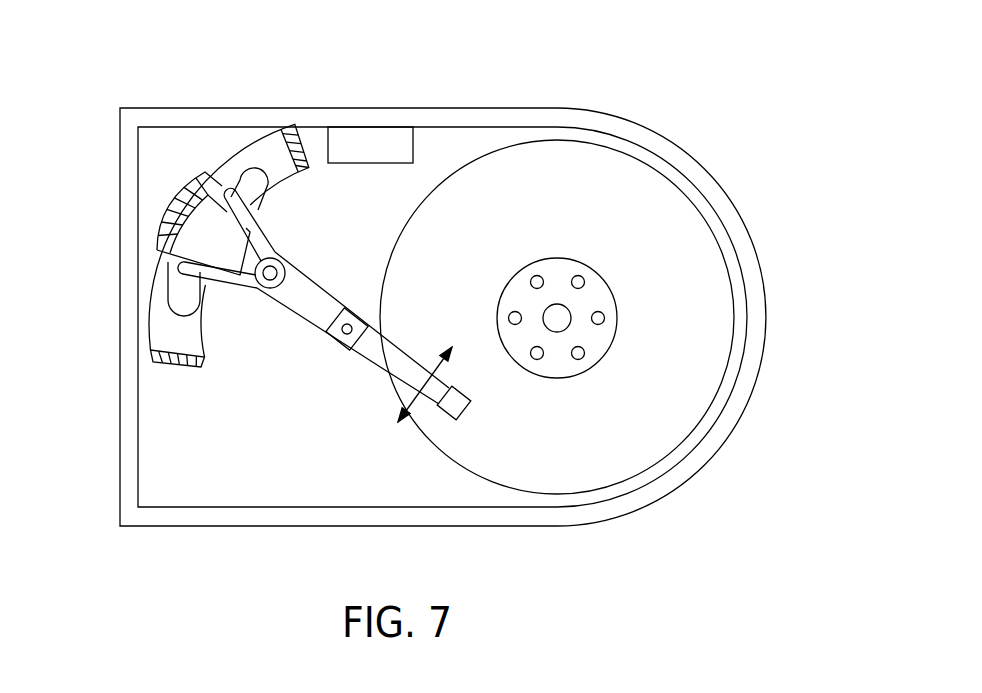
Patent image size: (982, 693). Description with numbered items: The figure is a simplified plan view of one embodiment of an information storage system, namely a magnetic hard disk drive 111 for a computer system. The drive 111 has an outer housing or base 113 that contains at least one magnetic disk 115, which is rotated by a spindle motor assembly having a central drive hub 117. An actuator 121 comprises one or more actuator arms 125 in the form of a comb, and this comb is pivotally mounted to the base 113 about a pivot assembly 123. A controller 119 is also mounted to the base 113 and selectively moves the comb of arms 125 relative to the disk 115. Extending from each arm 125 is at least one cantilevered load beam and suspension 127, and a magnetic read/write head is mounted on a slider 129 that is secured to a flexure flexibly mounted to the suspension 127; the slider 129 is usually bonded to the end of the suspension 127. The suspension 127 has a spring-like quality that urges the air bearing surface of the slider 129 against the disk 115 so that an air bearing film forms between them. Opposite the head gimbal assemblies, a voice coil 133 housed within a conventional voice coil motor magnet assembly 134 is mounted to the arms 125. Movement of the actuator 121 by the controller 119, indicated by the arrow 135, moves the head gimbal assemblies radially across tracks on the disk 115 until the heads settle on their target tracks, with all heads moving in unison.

The magnetic hard disk drive 111 is at (697, 118).
The outer housing or base 113 is at (458, 109).
The magnetic disk 115 is at (690, 287).
The central drive hub 117 is at (552, 257).
The controller 119 is at (367, 143).
The actuator 121 is at (302, 430).
The pivot assembly 123 is at (279, 253).
The actuator arm 125 is at (308, 328).
The load beam and suspension 127 is at (385, 340).
The slider 129 is at (472, 405).
The voice coil 133 is at (170, 190).
The voice coil motor magnet assembly 134 is at (285, 174).
The arrow indicating actuator movement 135 is at (425, 382).